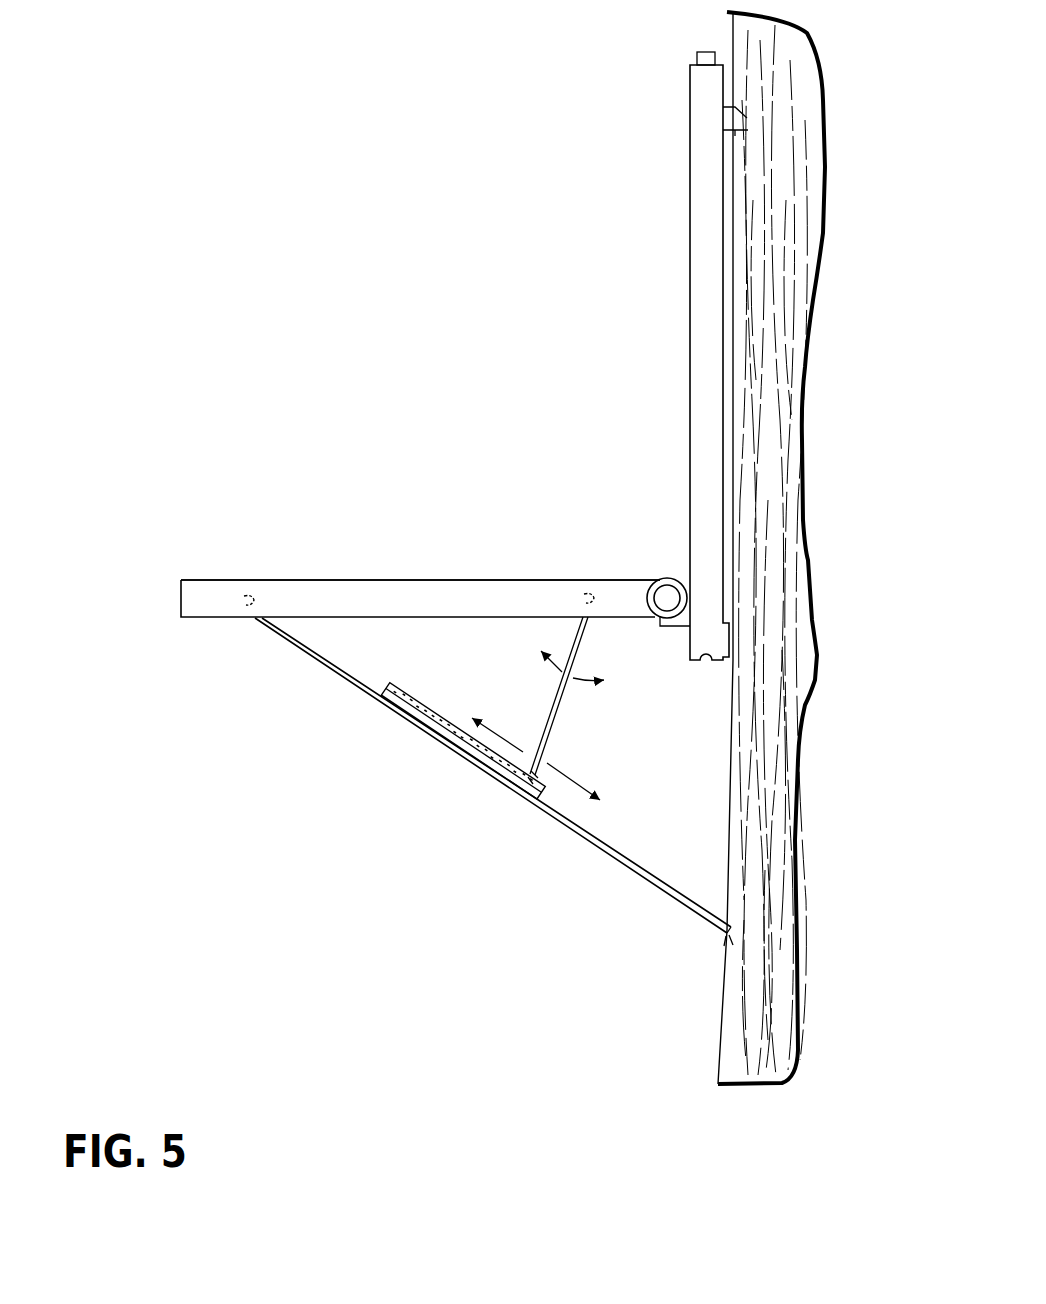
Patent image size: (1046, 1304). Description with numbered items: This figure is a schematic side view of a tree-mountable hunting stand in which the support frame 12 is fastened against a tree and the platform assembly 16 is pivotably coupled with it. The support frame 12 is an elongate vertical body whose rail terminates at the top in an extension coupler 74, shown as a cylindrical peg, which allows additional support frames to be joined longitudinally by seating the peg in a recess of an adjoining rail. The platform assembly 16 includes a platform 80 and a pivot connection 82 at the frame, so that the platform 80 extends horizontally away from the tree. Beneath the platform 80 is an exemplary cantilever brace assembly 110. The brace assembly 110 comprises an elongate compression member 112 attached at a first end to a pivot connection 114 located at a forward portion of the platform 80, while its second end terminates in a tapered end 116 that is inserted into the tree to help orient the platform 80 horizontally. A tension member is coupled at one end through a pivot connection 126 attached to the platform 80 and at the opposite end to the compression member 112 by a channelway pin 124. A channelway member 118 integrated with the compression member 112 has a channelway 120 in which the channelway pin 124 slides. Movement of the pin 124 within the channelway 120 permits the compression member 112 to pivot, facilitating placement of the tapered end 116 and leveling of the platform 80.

The support frame 12 is at (686, 176).
The extension coupler 74 is at (697, 58).
The platform assembly 16 is at (325, 570).
The platform 80 is at (428, 580).
The pivot connection 82 is at (668, 578).
The pivot connection 114 is at (245, 607).
The pivot connection 126 is at (582, 580).
The cantilever brace assembly 110 is at (493, 777).
The compression member 112 is at (612, 852).
The channelway member 118 is at (385, 690).
The channelway 120 is at (423, 735).
The channelway pin 124 is at (527, 800).
The tapered end 116 is at (740, 930).